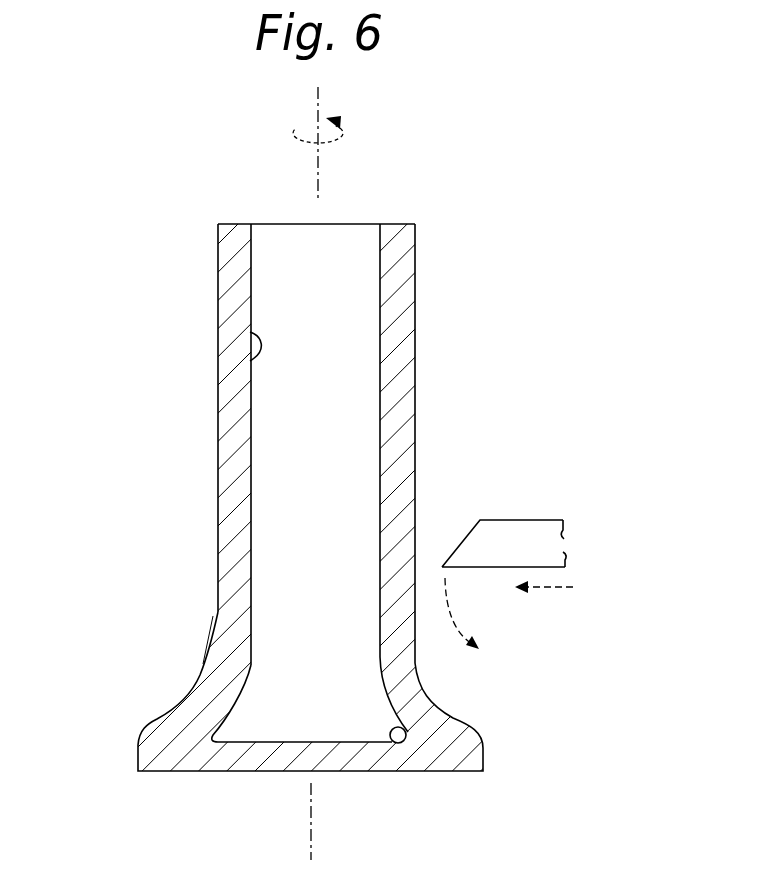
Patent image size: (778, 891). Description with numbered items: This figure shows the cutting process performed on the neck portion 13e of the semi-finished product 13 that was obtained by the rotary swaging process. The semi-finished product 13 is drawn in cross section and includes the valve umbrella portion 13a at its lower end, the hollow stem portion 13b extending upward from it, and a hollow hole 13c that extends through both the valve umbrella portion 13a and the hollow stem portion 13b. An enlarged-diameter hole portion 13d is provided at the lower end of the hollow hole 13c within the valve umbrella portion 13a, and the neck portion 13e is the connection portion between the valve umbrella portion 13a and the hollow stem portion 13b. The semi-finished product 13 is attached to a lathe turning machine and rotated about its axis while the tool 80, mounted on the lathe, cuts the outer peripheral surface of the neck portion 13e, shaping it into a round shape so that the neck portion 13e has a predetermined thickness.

The semi-finished product 13 is at (427, 310).
The valve umbrella portion 13a is at (160, 718).
The hollow stem portion 13b is at (218, 462).
The hollow hole 13c is at (250, 333).
The enlarged-diameter hole portion 13d is at (401, 743).
The neck portion 13e is at (196, 622).
The tool 80 is at (523, 518).